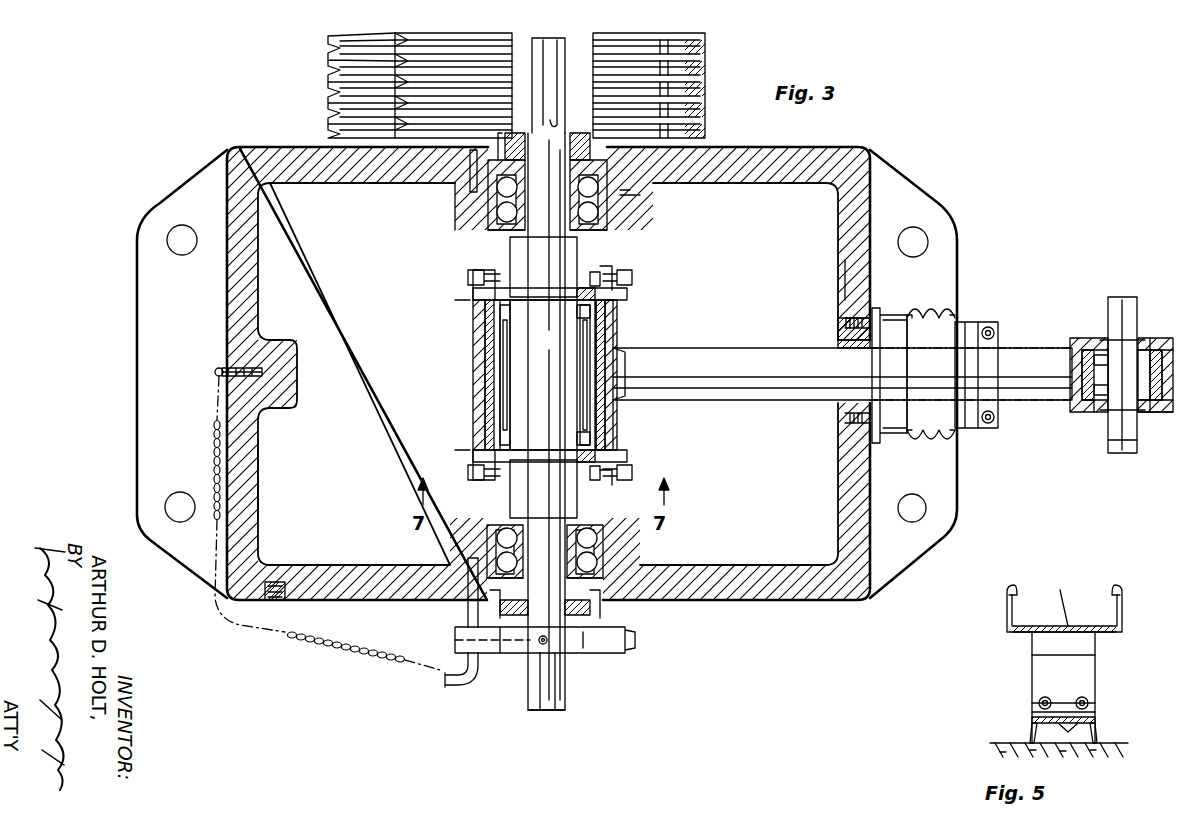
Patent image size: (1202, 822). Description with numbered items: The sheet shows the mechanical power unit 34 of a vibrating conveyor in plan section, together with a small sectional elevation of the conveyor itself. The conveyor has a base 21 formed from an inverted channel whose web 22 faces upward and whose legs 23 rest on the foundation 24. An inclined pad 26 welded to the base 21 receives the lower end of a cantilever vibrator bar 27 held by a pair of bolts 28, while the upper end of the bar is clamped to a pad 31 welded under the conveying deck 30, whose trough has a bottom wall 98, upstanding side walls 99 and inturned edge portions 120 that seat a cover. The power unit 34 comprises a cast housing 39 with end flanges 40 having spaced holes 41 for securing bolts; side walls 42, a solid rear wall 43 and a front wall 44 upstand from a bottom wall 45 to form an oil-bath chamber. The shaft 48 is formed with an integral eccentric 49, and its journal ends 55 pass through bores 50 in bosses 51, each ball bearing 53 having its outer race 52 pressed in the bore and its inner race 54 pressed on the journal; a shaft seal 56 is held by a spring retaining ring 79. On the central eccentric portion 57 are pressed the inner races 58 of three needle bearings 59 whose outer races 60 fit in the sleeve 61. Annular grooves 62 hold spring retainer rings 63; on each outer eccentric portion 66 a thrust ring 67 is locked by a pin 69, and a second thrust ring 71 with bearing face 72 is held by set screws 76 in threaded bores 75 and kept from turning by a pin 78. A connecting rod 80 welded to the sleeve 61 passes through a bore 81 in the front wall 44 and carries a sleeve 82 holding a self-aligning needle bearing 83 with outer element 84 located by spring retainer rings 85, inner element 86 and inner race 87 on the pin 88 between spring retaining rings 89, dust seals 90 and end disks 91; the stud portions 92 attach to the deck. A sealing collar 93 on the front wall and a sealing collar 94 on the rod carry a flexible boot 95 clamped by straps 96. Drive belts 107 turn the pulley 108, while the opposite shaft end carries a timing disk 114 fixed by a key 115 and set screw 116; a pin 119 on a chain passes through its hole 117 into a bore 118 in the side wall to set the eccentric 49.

In FIG. 5, the base 21 is at (1108, 724).
In FIG. 5, the web 22 is at (1096, 718).
In FIG. 5, the legs 23 is at (1032, 730).
In FIG. 5, the foundation 24 is at (1010, 745).
In FIG. 5, the pad 26 is at (1096, 708).
In FIG. 5, the cantilever vibrator bar 27 is at (1092, 665).
In FIG. 5, the bolts 28 is at (1076, 702).
In FIG. 3, the conveying deck 30 is at (1000, 617).
In FIG. 5, the pad 31 is at (1032, 648).
In FIG. 3, the power unit 34 is at (292, 144).
In FIG. 3, the housing 39 is at (796, 590).
In FIG. 3, the flange 40 is at (150, 348).
In FIG. 3, the holes 41 is at (170, 236).
In FIG. 3, the side walls 42 is at (762, 155).
In FIG. 3, the rear wall 43 is at (255, 466).
In FIG. 3, the front wall 44 is at (842, 258).
In FIG. 3, the bottom wall 45 is at (780, 474).
In FIG. 3, the shaft 48 is at (555, 712).
In FIG. 3, the eccentric 49 is at (613, 332).
In FIG. 3, the bores 50 is at (625, 222).
In FIG. 3, the boss 51 is at (625, 210).
In FIG. 3, the outer race 52 is at (500, 206).
In FIG. 3, the ball bearing 53 is at (488, 224).
In FIG. 3, the inner race 54 is at (625, 196).
In FIG. 3, the journal ends 55 is at (560, 160).
In FIG. 3, the shaft seal 56 is at (508, 150).
In FIG. 3, the central eccentric portion 57 is at (565, 400).
In FIG. 3, the inner races 58 is at (474, 316).
In FIG. 3, the needle bearings 59 is at (500, 360).
In FIG. 3, the outer races 60 is at (503, 385).
In FIG. 3, the sleeve 61 is at (486, 336).
In FIG. 3, the annular grooves 62 is at (522, 294).
In FIG. 3, the spring retainer ring 63 is at (508, 305).
In FIG. 3, the outer eccentric portion 66 is at (562, 255).
In FIG. 3, the thrust ring 67 is at (595, 308).
In FIG. 3, the pin 69 is at (475, 300).
In FIG. 3, the thrust ring 71 is at (612, 270).
In FIG. 3, the bearing face 72 is at (596, 294).
In FIG. 3, the threaded bores 75 is at (632, 278).
In FIG. 3, the set screw 76 is at (468, 278).
In FIG. 3, the pin 78 is at (500, 278).
In FIG. 3, the spring retaining ring 79 is at (700, 165).
In FIG. 3, the connecting rod 80 is at (748, 360).
In FIG. 3, the bore 81 is at (850, 345).
In FIG. 3, the sleeve 82 is at (1072, 355).
In FIG. 3, the self-aligning needle bearing 83 is at (1145, 345).
In FIG. 3, the outer element 84 is at (1168, 412).
In FIG. 3, the spring retainer rings 85 is at (1085, 352).
In FIG. 3, the inner element 86 is at (1145, 415).
In FIG. 3, the inner race 87 is at (1150, 345).
In FIG. 3, the pin 88 is at (1121, 292).
In FIG. 3, the spring retaining rings 89 is at (1100, 345).
In FIG. 3, the dust seals 90 is at (1085, 410).
In FIG. 3, the end disks 91 is at (1105, 350).
In FIG. 3, the stud portions 92 is at (1112, 445).
In FIG. 3, the sealing collar 93 is at (896, 336).
In FIG. 3, the sealing collar 94 is at (990, 360).
In FIG. 3, the flexible boot 95 is at (930, 316).
In FIG. 3, the straps 96 is at (897, 435).
In FIG. 5, the bottom wall 98 is at (1060, 626).
In FIG. 5, the side walls 99 is at (1012, 612).
In FIG. 3, the drive belts 107 is at (340, 112).
In FIG. 3, the pulley 108 is at (706, 36).
In FIG. 3, the timing disk 114 is at (628, 652).
In FIG. 3, the key 115 is at (552, 660).
In FIG. 3, the set screw 116 is at (540, 644).
In FIG. 3, the hole 117 is at (455, 641).
In FIG. 3, the bore 118 is at (468, 176).
In FIG. 3, the pin 119 is at (455, 682).
In FIG. 5, the inturned edge portion 120 is at (1108, 596).